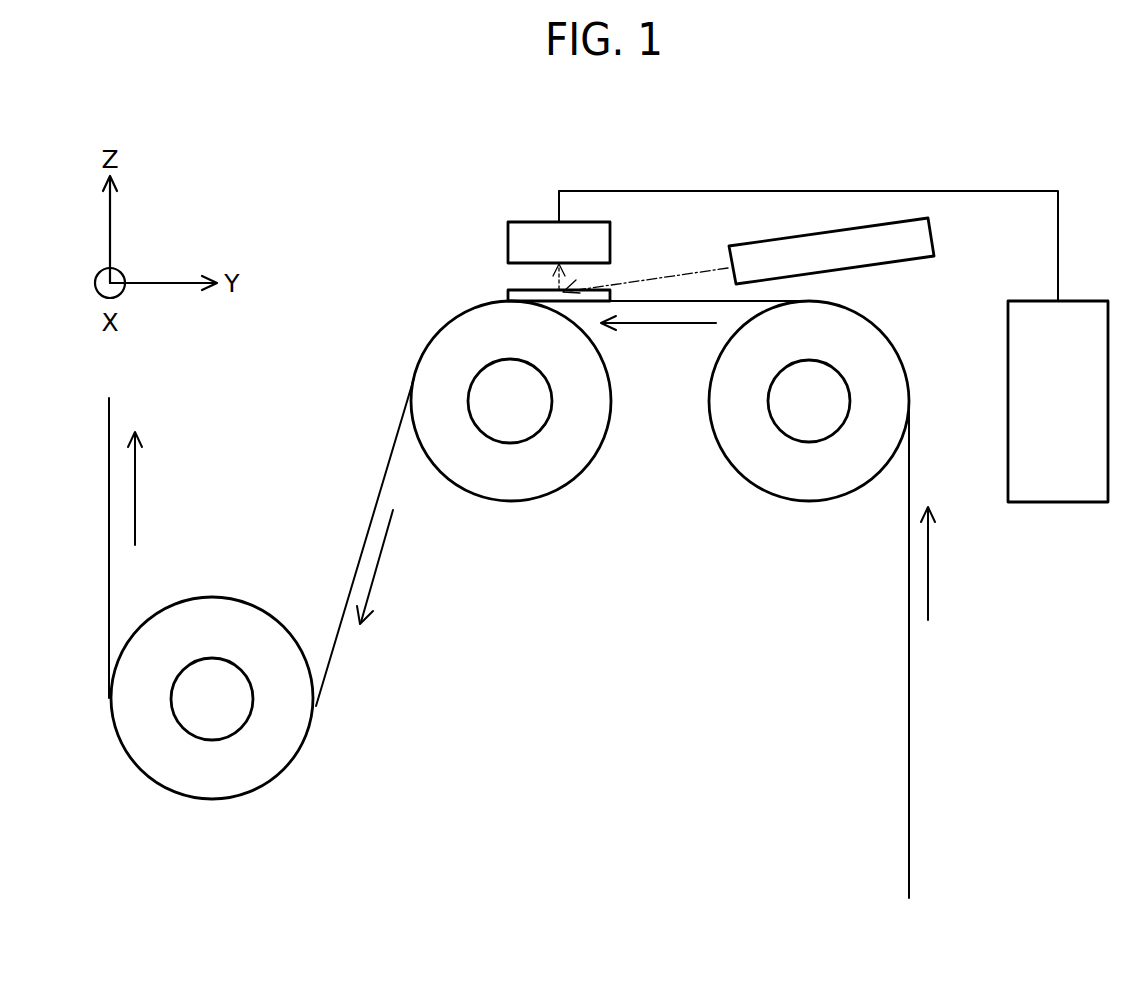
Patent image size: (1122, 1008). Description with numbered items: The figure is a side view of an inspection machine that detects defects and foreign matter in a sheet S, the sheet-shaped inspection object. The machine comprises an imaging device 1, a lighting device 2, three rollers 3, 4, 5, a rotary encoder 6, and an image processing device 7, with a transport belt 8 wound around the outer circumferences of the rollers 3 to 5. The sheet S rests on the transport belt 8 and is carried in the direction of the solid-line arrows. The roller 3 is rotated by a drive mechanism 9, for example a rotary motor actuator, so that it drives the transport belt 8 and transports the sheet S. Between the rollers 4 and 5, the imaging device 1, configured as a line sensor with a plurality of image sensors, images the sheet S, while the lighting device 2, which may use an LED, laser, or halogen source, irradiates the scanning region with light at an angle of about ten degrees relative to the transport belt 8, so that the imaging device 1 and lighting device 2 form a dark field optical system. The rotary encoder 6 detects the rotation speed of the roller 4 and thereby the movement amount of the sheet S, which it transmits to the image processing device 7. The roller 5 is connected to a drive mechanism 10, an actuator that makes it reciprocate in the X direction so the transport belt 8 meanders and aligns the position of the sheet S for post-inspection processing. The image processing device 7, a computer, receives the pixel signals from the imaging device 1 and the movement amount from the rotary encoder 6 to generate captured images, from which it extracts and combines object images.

The imaging device 1 is at (537, 222).
The lighting device 2 is at (907, 265).
The roller 3 is at (210, 798).
The roller 4 is at (510, 502).
The roller 5 is at (800, 502).
The rotary encoder 6 is at (525, 443).
The image processing device 7 is at (1093, 300).
The transport belt 8 is at (909, 737).
The drive mechanism 9 is at (222, 740).
The drive mechanism 10 is at (812, 443).
The sheet S is at (508, 297).